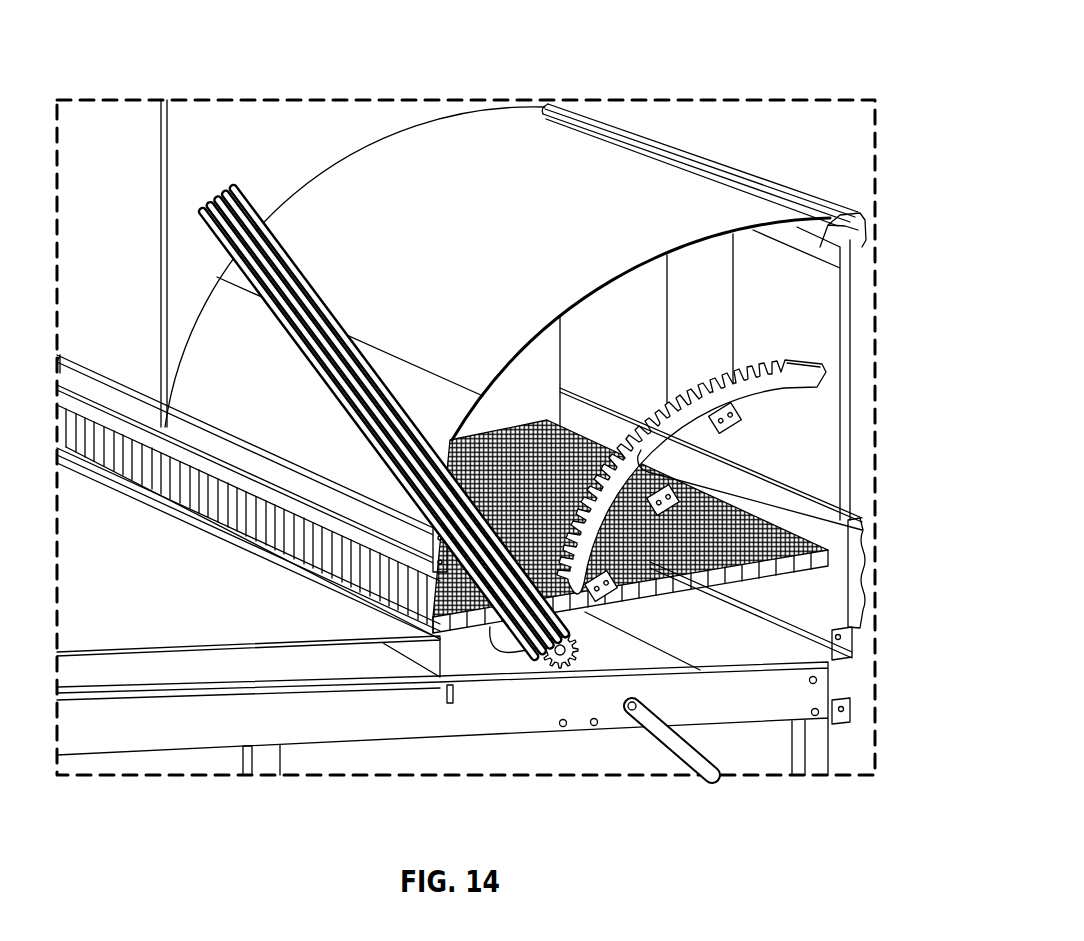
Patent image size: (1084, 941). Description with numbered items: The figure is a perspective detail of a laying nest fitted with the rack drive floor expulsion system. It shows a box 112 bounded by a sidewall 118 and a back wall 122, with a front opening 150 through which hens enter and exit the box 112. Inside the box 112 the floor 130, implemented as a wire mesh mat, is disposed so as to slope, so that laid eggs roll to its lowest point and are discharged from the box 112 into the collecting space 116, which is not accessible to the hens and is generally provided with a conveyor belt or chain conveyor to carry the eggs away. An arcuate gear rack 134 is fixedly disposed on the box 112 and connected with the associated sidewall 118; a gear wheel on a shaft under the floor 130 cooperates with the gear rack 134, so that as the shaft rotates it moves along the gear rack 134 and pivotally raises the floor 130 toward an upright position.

The box 112 is at (783, 47).
The collecting space 116 is at (262, 598).
The sidewall 118 is at (545, 410).
The back wall 122 is at (504, 231).
The floor 130 is at (823, 660).
The gear rack 134 is at (673, 480).
The front opening 150 is at (727, 331).